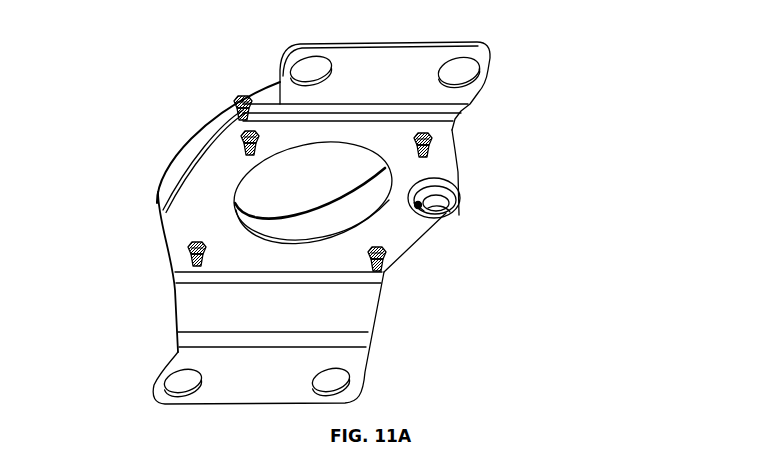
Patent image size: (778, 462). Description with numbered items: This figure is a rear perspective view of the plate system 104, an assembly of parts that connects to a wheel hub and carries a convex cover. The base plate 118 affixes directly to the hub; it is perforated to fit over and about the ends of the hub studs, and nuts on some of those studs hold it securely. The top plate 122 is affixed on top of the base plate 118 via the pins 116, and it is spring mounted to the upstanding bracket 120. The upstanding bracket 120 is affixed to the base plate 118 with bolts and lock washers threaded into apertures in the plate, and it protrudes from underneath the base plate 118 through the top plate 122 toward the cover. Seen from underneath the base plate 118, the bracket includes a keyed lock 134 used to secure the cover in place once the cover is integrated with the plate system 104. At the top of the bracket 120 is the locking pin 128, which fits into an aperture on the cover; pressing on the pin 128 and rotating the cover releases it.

The plate system 104 is at (359, 212).
The pins 116 is at (432, 151).
The base plate 118 is at (348, 312).
The upstanding bracket 120 is at (178, 213).
The top plate 122 is at (203, 130).
The locking pin 128 is at (442, 210).
The keyed lock 134 is at (483, 251).